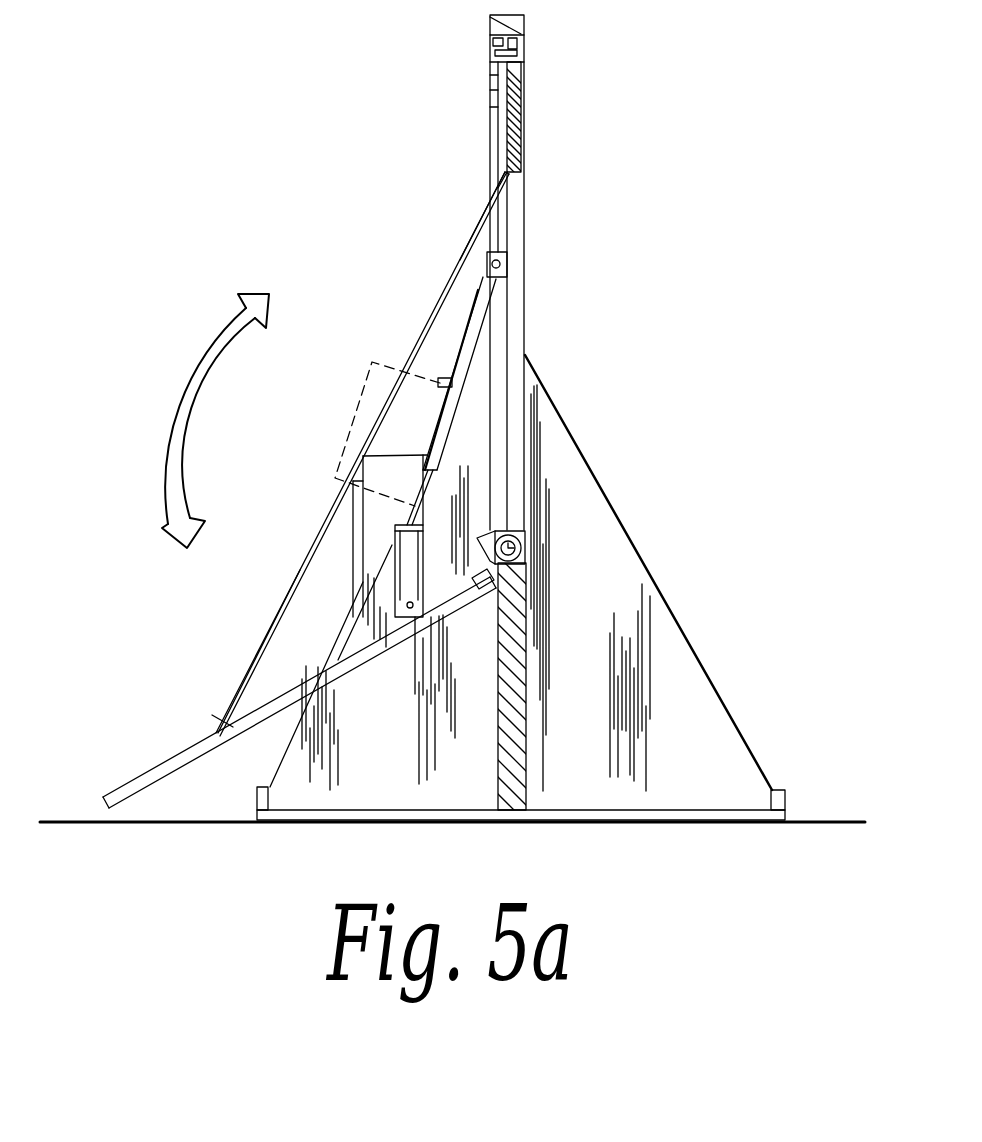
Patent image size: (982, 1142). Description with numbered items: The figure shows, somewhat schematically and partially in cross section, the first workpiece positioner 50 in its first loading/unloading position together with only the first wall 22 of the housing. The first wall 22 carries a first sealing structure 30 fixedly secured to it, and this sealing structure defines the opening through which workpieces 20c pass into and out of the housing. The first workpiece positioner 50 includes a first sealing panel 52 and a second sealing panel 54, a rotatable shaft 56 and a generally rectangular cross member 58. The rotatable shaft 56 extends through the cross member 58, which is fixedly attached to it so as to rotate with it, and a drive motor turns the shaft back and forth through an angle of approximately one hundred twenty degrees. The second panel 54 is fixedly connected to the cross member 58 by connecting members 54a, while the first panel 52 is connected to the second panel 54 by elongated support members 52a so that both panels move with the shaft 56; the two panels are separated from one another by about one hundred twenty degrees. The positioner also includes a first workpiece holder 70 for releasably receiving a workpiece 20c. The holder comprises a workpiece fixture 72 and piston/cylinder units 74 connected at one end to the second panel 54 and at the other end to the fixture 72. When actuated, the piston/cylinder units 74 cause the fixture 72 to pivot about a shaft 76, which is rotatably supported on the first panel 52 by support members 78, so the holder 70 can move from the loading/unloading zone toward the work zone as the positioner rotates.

The first sealing structure 30 is at (525, 38).
The first wall 22 is at (512, 632).
The first workpiece positioner 50 is at (396, 300).
The workpiece 20c is at (372, 420).
The first sealing panel 52 is at (515, 262).
The elongated support member 52a is at (275, 612).
The second sealing panel 54 is at (192, 752).
The connecting member 54a is at (489, 582).
The rotatable shaft 56 is at (520, 543).
The cross member 58 is at (494, 532).
The first workpiece holder 70 is at (438, 447).
The workpiece fixture 72 is at (447, 412).
The piston/cylinder unit 74 is at (407, 582).
The shaft 76 is at (502, 258).
The support member 78 is at (504, 270).